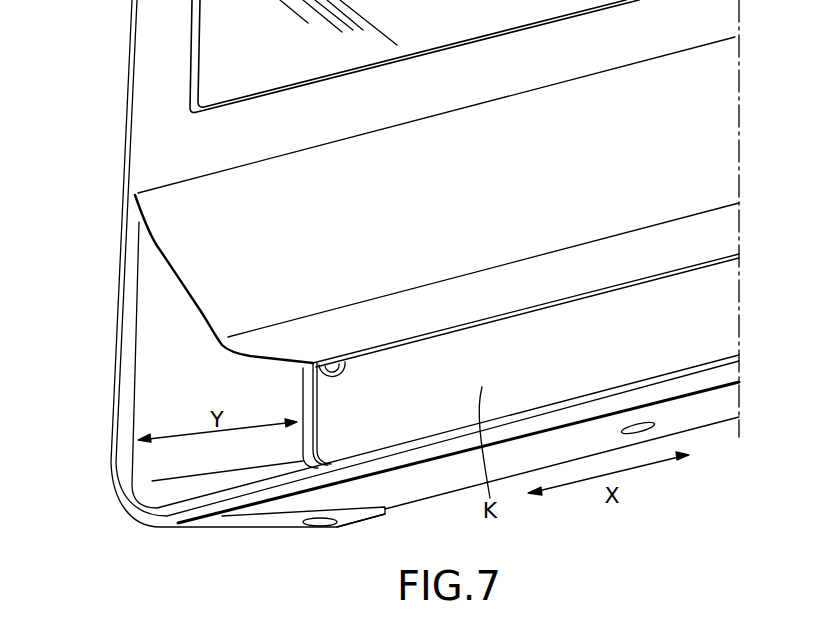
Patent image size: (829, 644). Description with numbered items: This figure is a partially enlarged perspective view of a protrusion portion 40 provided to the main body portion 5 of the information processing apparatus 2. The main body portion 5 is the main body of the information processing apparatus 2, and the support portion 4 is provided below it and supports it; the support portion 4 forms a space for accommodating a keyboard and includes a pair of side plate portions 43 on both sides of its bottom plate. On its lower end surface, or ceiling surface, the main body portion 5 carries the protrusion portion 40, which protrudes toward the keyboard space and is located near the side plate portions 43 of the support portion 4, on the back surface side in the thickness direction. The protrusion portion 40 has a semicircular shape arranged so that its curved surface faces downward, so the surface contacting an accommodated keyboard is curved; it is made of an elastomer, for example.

The information processing apparatus 2 is at (108, 190).
The main body portion 5 is at (133, 40).
The protrusion portion 40 is at (340, 366).
The side plate portion 43 is at (128, 359).
The support portion 4 is at (117, 414).